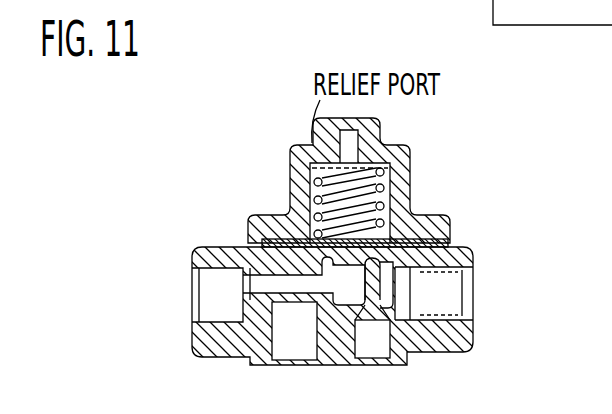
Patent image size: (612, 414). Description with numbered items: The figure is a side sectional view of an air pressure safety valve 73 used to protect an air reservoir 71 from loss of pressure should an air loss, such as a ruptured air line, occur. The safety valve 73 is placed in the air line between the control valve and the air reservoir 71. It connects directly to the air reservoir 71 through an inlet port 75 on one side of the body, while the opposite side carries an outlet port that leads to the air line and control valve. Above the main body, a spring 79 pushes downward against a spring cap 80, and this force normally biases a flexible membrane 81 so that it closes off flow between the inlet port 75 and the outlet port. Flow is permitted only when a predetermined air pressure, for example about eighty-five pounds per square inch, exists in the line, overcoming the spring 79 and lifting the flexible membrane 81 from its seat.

The air reservoir 71 is at (196, 295).
The safety valve 73 is at (478, 247).
The inlet port 75 is at (468, 298).
The spring 79 is at (380, 188).
The spring cap 80 is at (385, 243).
The flexible membrane 81 is at (447, 238).